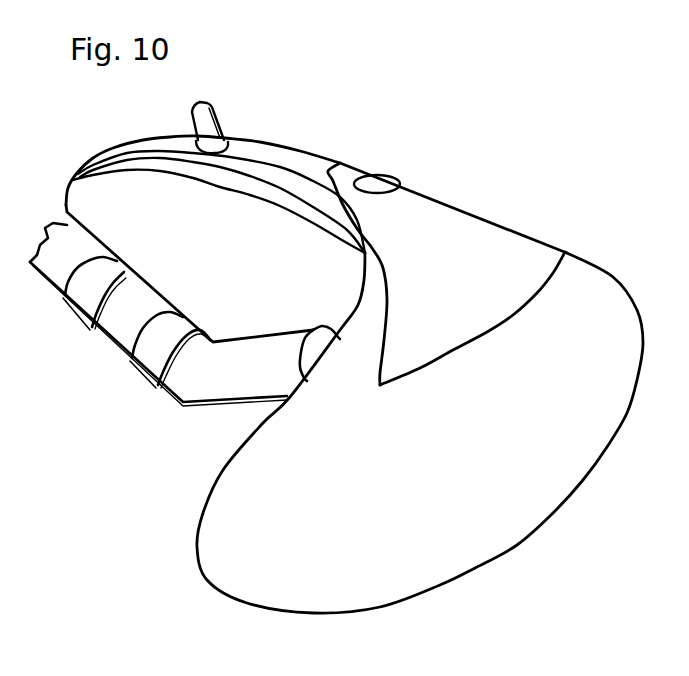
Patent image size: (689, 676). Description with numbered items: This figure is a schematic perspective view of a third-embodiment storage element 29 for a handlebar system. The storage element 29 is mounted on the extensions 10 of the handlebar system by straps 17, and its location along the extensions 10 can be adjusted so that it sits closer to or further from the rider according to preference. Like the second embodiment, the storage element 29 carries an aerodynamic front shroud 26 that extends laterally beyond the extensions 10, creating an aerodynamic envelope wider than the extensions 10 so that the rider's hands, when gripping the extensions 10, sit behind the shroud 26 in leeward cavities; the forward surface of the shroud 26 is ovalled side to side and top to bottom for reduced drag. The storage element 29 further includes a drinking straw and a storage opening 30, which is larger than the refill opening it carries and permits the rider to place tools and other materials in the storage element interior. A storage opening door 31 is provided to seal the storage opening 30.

The extensions 10 is at (117, 345).
The straps 17 is at (72, 312).
The aerodynamic front shroud 26 is at (587, 300).
The storage element 29 is at (327, 136).
The storage opening 30 is at (372, 230).
The storage opening door 31 is at (502, 255).